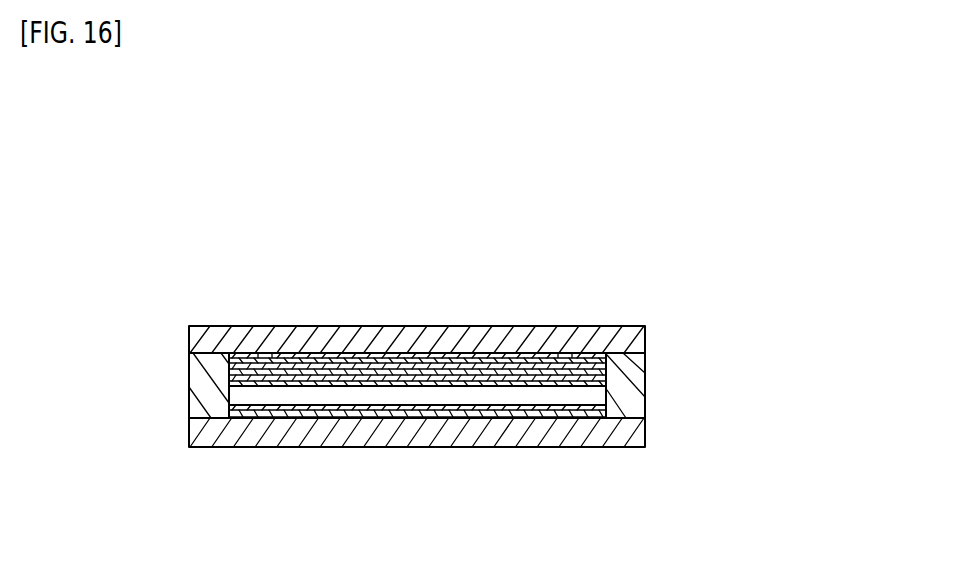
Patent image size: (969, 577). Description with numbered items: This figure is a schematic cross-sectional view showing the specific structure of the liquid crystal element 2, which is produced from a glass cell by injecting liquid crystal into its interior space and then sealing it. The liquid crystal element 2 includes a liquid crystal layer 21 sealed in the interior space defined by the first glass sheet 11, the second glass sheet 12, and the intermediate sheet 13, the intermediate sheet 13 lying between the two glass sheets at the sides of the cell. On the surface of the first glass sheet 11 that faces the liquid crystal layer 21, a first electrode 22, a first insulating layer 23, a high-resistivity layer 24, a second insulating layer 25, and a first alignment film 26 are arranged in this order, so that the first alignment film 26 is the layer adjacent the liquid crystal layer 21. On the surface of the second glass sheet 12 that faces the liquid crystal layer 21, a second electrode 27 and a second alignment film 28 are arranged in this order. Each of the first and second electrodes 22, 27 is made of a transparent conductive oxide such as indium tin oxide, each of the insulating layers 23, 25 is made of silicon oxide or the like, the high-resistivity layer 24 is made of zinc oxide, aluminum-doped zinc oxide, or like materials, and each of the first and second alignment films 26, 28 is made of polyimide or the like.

The liquid crystal element 2 is at (607, 197).
The first glass sheet 11 is at (187, 342).
The second glass sheet 12 is at (187, 432).
The intermediate sheet 13 is at (187, 395).
The liquid crystal layer 21 is at (417, 405).
The first electrode 22 is at (425, 353).
The first insulating layer 23 is at (607, 357).
The high-resistivity layer 24 is at (607, 366).
The second insulating layer 25 is at (607, 373).
The first alignment film 26 is at (607, 382).
The second electrode 27 is at (607, 415).
The second alignment film 28 is at (607, 409).